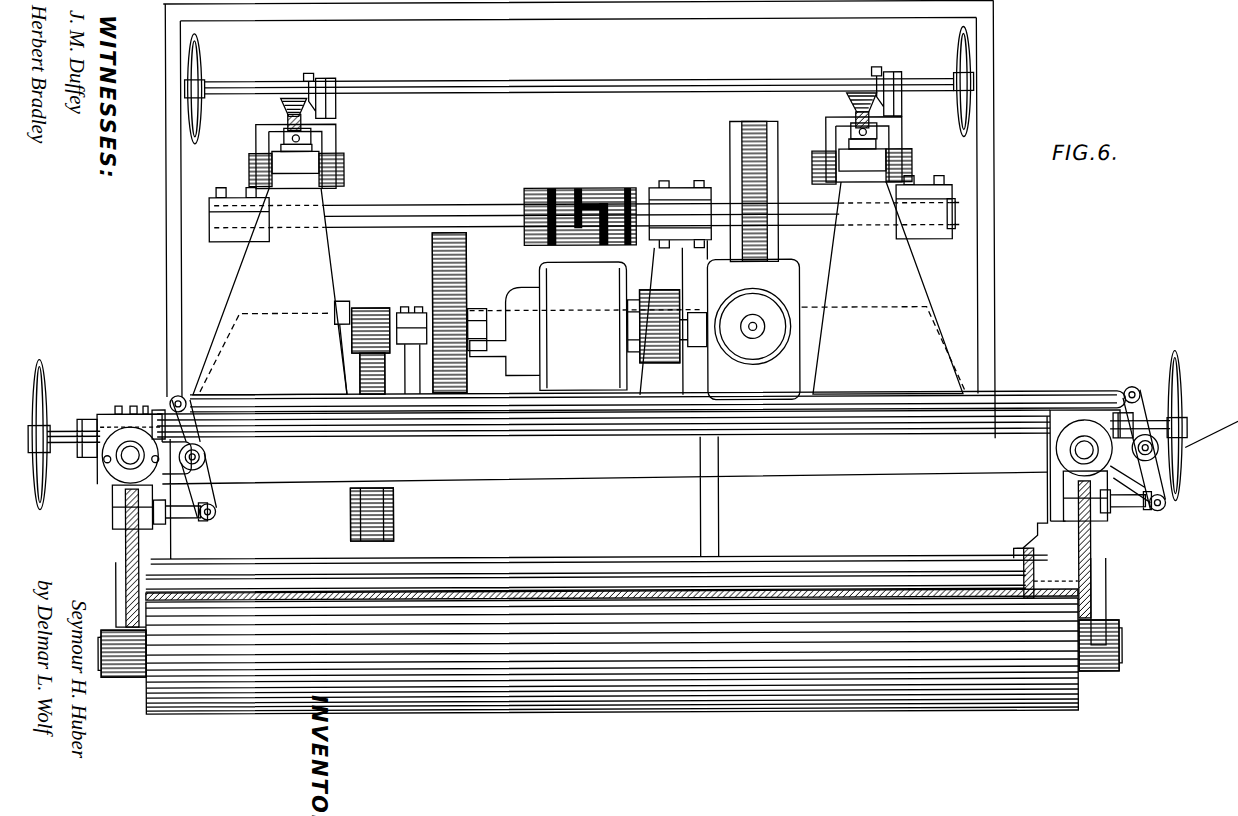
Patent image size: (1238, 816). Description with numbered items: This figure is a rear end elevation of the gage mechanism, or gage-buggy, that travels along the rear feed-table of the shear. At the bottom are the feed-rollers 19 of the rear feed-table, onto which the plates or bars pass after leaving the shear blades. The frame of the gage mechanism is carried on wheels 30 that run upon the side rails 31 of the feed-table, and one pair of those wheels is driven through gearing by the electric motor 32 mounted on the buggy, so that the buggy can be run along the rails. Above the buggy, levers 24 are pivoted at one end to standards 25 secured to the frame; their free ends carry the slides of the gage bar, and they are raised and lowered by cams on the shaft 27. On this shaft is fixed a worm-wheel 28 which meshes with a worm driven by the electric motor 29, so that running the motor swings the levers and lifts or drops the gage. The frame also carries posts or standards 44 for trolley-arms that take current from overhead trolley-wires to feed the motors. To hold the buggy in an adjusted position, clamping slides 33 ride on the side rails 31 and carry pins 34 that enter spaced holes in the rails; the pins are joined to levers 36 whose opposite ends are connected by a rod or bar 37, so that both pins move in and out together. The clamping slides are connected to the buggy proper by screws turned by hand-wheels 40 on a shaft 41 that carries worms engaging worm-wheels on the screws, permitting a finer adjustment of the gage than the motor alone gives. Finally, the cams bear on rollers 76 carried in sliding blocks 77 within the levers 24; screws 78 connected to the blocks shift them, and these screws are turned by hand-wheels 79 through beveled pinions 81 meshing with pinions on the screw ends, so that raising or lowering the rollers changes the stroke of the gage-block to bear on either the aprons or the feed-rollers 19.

The feed-rollers 19 is at (610, 656).
The levers 24 is at (337, 145).
The standards 25 is at (578, 288).
The shaft 27 is at (461, 213).
The worm-wheel 28 is at (733, 131).
The electric motor 29 is at (753, 329).
The wheels 30 is at (131, 408).
The side rails 31 is at (122, 542).
The electric motor 32 is at (584, 326).
The slides 33 is at (120, 494).
The pins 34 is at (178, 508).
The levers 36 is at (204, 472).
The rod or bar 37 is at (1011, 391).
The hand-wheels 40 is at (1168, 367).
The shaft 41 is at (64, 427).
The posts or standards 44 is at (168, 262).
The rollers 76 is at (298, 153).
The sliding blocks 77 is at (307, 135).
The screws 78 is at (285, 131).
The hand-wheels 79 is at (206, 58).
The beveled pinions 81 is at (318, 75).